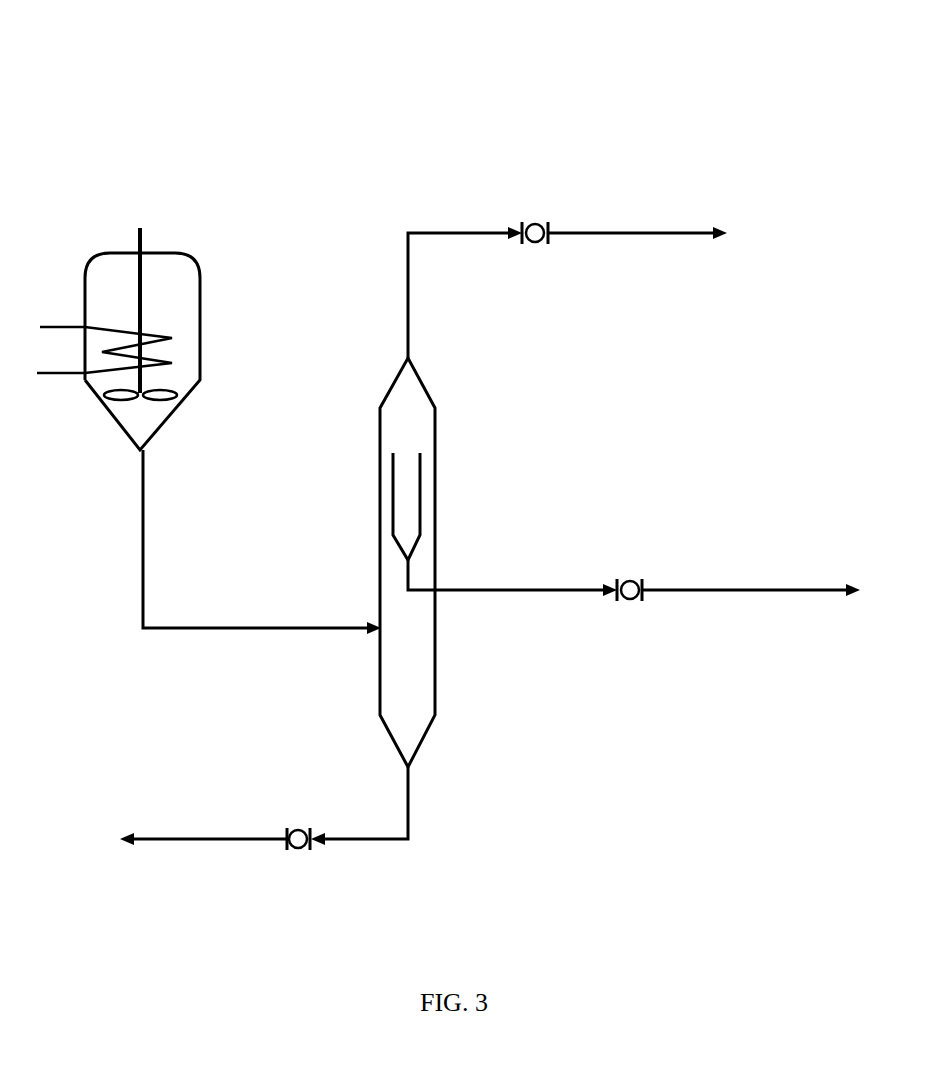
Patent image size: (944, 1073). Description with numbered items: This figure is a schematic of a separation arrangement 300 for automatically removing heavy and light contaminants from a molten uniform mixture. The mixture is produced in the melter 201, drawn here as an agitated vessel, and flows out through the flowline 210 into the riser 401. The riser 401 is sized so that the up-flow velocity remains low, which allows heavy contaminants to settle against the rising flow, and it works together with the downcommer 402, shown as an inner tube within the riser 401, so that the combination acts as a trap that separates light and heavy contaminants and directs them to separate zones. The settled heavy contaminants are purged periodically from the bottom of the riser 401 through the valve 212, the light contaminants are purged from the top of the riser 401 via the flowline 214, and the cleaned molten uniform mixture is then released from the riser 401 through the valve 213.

The dissolution and separation system 300 is at (448, 108).
The melter 201 is at (200, 325).
The flowline 210 is at (146, 480).
The riser 401 is at (437, 652).
The downcommer 402 is at (421, 485).
The flowline 214 is at (537, 246).
The valve 213 is at (626, 602).
The valve 212 is at (299, 826).